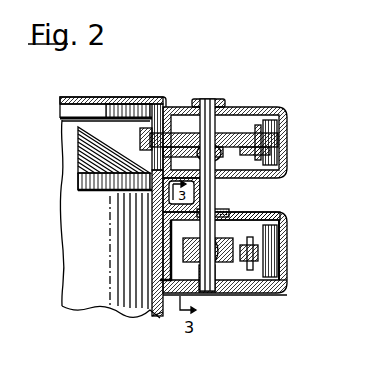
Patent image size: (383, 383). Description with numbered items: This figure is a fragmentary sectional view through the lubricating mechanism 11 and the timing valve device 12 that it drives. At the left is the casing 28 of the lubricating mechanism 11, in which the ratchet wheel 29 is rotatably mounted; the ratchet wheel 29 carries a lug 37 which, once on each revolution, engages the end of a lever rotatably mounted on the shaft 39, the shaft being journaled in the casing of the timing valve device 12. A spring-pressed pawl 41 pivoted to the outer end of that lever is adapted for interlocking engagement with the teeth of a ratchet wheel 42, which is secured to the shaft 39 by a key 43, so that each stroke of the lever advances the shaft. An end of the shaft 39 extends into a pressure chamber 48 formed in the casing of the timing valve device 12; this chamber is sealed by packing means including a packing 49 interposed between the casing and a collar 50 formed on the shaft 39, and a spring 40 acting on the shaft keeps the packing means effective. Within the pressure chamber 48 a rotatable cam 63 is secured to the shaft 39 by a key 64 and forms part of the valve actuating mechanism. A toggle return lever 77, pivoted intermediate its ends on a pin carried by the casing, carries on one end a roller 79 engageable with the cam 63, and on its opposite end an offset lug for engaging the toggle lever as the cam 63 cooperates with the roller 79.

The lubricating mechanism 11 is at (57, 100).
The timing valve device 12 is at (285, 287).
The casing 28 is at (160, 316).
The ratchet wheel 29 is at (85, 155).
The lug 37 is at (114, 137).
The shaft 39 is at (210, 127).
The spring 40 is at (209, 292).
The spring-pressed pawl 41 is at (285, 143).
The ratchet wheel 42 is at (280, 160).
The key 43 is at (224, 153).
The pressure chamber 48 is at (287, 235).
The packing 49 is at (282, 207).
The collar 50 is at (196, 214).
The cam 63 is at (255, 263).
The key 64 is at (228, 262).
The toggle return lever 77 is at (280, 273).
The roller 79 is at (258, 262).